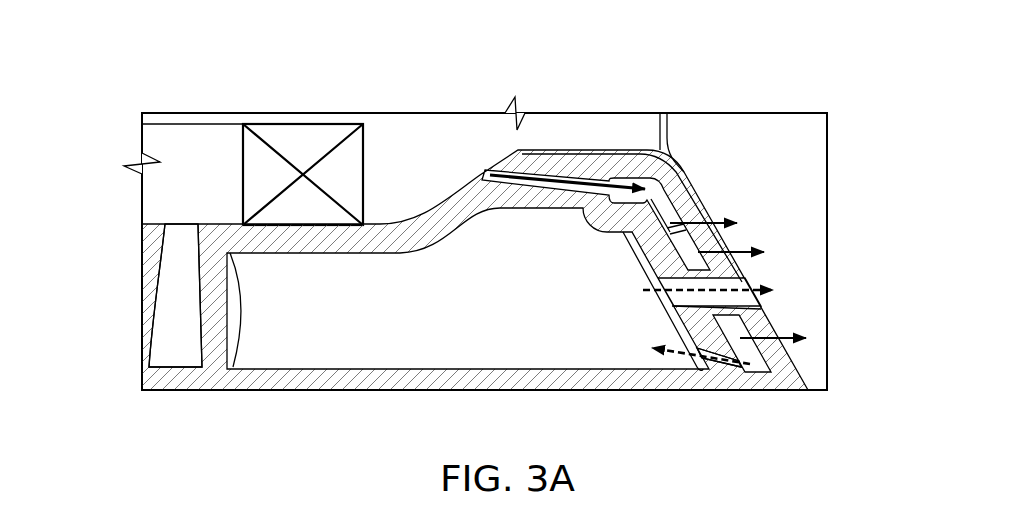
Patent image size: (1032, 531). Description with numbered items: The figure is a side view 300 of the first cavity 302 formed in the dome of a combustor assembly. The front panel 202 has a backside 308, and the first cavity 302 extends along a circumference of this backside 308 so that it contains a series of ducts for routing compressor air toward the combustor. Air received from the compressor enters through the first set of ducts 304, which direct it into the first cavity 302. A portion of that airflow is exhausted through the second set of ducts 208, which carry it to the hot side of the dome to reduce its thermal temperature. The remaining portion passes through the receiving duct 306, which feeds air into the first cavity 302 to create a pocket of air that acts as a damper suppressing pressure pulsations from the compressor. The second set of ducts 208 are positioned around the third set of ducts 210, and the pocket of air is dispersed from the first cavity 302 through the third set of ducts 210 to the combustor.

The side view 300 is at (646, 64).
The front panel 202 is at (700, 176).
The second set of ducts 208 is at (748, 217).
The third set of ducts 210 is at (643, 291).
The first cavity 302 is at (562, 393).
The first set of ducts 304 is at (478, 174).
The receiving duct 306 is at (716, 372).
The backside 308 is at (141, 293).